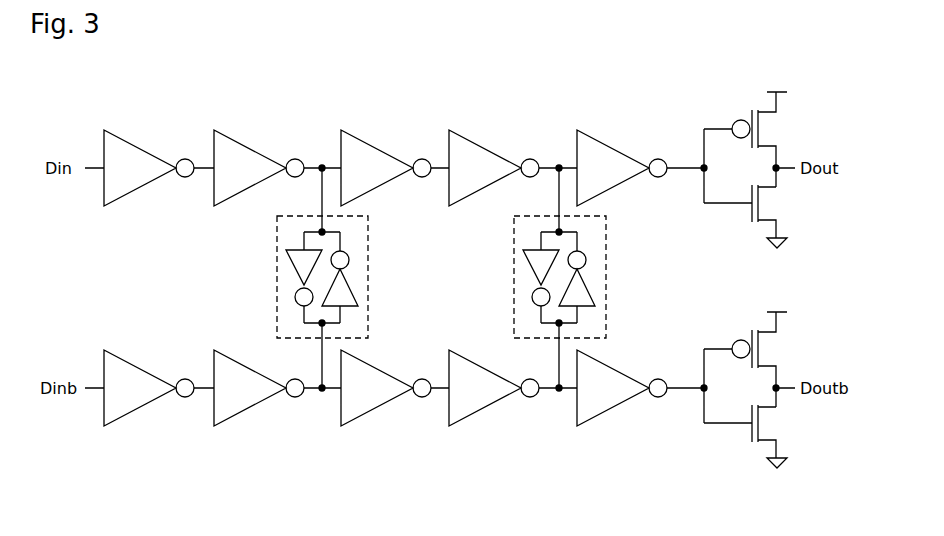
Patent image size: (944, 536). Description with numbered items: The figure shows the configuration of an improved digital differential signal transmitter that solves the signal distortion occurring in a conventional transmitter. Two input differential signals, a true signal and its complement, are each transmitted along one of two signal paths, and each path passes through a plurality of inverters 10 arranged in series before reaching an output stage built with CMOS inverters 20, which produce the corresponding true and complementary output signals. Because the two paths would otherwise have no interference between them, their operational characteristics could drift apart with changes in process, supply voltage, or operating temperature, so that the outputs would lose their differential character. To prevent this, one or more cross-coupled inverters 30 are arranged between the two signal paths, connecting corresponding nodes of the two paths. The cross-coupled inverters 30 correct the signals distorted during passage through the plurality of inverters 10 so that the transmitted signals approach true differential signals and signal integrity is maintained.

The inverter 10 is at (607, 142).
The CMOS inverter 20 is at (775, 128).
The cross-coupled inverters 30 is at (608, 278).